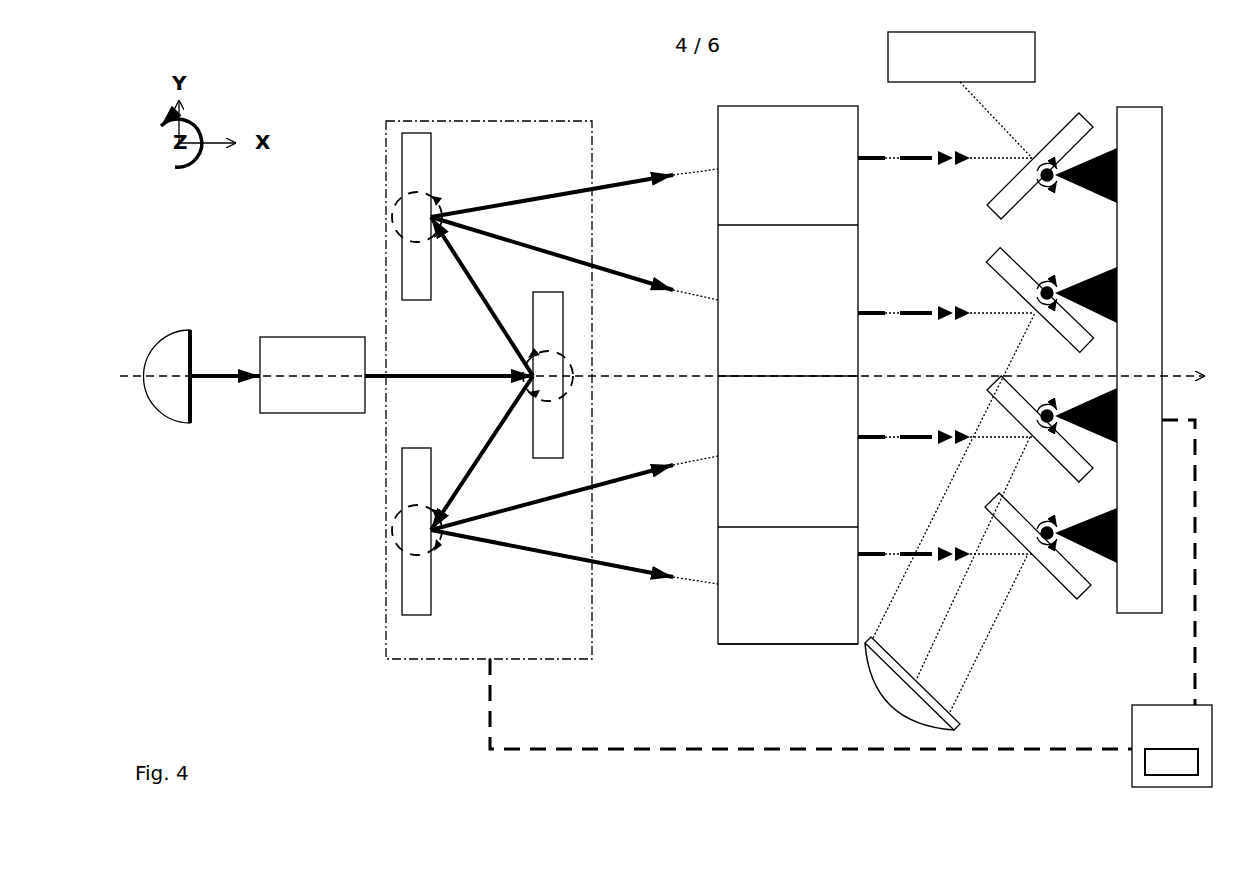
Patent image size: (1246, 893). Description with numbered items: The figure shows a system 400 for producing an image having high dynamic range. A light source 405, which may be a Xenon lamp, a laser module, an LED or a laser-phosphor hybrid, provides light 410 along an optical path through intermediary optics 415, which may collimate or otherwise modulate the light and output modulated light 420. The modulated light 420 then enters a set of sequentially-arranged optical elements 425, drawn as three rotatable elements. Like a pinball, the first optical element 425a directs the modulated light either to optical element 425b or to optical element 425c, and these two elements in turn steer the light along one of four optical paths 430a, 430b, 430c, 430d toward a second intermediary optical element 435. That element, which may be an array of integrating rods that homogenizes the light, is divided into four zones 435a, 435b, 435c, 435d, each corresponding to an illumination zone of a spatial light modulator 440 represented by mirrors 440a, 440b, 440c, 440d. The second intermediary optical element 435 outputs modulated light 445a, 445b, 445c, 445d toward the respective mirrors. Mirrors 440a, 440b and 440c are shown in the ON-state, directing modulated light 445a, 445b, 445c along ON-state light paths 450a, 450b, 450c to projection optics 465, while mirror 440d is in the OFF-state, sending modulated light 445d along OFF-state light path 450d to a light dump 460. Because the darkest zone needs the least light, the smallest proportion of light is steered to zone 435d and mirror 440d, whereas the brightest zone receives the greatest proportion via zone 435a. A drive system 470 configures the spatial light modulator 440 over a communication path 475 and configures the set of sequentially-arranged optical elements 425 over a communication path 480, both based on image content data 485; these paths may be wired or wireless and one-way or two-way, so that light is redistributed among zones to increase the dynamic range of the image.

The system 400 is at (350, 92).
The light source 405 is at (189, 423).
The light 410 is at (223, 378).
The intermediary optics 415 is at (189, 335).
The modulated light 420 is at (405, 371).
The set of sequentially-arranged optical elements 425 is at (507, 118).
The optical element 425a is at (563, 352).
The optical element 425b is at (417, 615).
The optical element 425c is at (402, 209).
The optical path 430a is at (690, 582).
The optical path 430b is at (690, 458).
The optical path 430c is at (697, 295).
The optical path 430d is at (692, 172).
The second intermediary optical element 435 is at (753, 355).
The zone 435a is at (788, 608).
The zone 435b is at (788, 475).
The zone 435c is at (788, 326).
The zone 435d is at (788, 190).
The spatial light modulator (SLM) 440 is at (1127, 105).
The mirror 440a is at (988, 512).
The mirror 440b is at (1000, 383).
The mirror 440c is at (1013, 262).
The mirror 440d is at (1067, 120).
The modulated light 445a is at (878, 553).
The modulated light 445b is at (925, 437).
The modulated light 445c is at (872, 312).
The modulated light 445d is at (878, 160).
The ON-state light path 450a is at (968, 686).
The ON-state light path 450b is at (927, 660).
The ON-state light path 450c is at (890, 613).
The OFF-state light path 450d is at (987, 112).
The light dump 460 is at (961, 57).
The projection optics 465 is at (888, 708).
The drive system 470 is at (1172, 746).
The communication path 475 is at (1193, 633).
The communication path 480 is at (693, 747).
The image content data 485 is at (1171, 762).